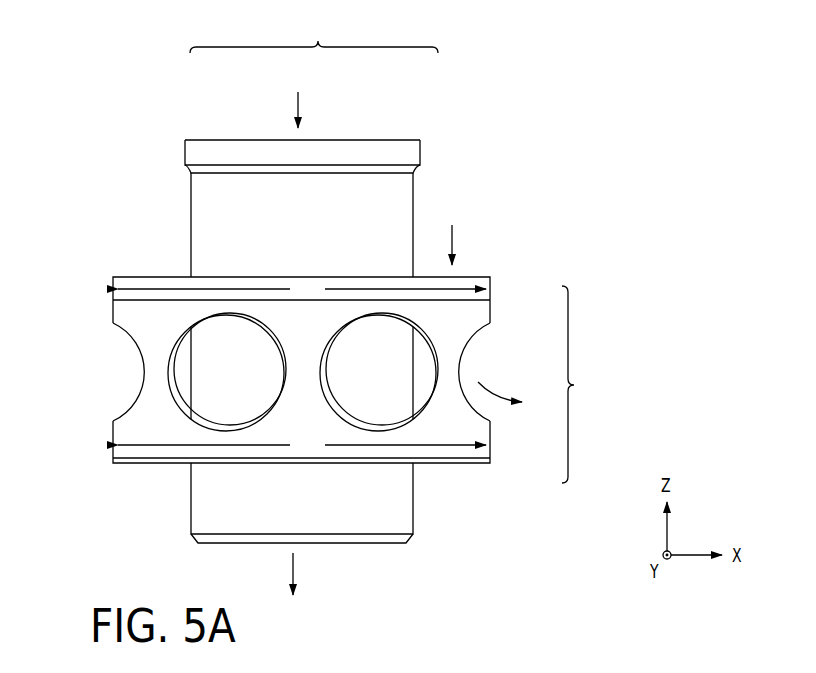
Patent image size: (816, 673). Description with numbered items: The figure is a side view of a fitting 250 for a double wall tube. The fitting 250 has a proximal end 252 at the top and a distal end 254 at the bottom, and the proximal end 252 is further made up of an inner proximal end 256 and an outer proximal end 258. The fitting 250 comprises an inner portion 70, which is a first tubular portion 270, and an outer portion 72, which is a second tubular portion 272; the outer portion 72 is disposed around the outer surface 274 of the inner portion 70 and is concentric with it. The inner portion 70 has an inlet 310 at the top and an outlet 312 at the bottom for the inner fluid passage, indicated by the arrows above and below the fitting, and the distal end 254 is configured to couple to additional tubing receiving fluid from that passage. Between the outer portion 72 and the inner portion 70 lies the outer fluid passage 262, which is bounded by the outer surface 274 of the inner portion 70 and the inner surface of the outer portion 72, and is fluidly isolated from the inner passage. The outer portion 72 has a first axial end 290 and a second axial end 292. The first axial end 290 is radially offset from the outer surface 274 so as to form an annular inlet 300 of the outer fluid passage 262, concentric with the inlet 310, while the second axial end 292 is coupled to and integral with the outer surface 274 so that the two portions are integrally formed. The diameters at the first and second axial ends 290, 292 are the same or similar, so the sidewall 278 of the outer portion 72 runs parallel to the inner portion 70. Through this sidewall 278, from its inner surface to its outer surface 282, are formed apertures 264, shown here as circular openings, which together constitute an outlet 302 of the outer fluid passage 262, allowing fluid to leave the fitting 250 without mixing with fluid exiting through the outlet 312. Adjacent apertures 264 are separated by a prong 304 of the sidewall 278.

The fitting 250 is at (90, 93).
The proximal end 252 is at (442, 141).
The distal end 254 is at (397, 545).
The inner proximal end 256 is at (421, 140).
The outer proximal end 258 is at (479, 277).
The outer fluid passage 262 is at (475, 348).
The apertures 264 is at (421, 342).
The inner portion 70 is at (314, 30).
The first tubular portion 270 is at (314, 47).
The outer portion 72 is at (607, 384).
The second tubular portion 272 is at (568, 384).
The outer surface 274 is at (322, 237).
The sidewall 278 is at (126, 306).
The outer surface 282 is at (323, 335).
The first axial end 290 is at (105, 276).
The second axial end 292 is at (118, 478).
The inlet 300 is at (453, 231).
The outlet 302 is at (518, 400).
The prong 304 is at (157, 372).
The inlet 310 is at (301, 95).
The outlet 312 is at (312, 587).